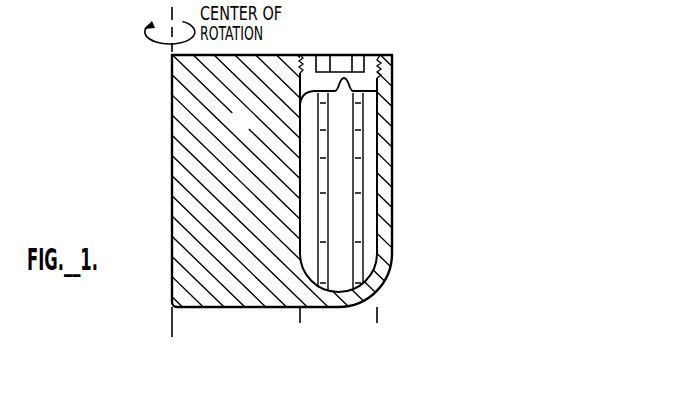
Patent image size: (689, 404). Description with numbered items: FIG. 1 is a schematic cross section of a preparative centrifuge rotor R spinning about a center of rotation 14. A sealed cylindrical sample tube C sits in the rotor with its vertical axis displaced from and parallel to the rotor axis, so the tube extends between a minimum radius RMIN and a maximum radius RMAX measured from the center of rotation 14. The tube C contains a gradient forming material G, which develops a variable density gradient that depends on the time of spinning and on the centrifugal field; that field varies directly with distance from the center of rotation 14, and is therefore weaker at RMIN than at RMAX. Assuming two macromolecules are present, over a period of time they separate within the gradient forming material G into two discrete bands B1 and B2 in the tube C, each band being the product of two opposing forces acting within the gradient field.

The center of rotation 14 is at (172, 142).
The sealed cylindrical tube C is at (301, 231).
The gradient forming material G is at (337, 104).
The separated macromolecule band B1 is at (323, 203).
The separated macromolecule band B2 is at (358, 113).
The preparative rotor R is at (243, 136).
The minimum radius RMIN is at (305, 331).
The maximum radius RMAX is at (381, 328).